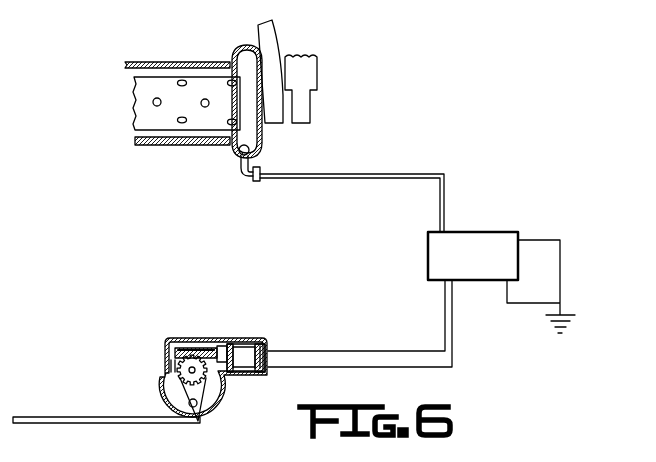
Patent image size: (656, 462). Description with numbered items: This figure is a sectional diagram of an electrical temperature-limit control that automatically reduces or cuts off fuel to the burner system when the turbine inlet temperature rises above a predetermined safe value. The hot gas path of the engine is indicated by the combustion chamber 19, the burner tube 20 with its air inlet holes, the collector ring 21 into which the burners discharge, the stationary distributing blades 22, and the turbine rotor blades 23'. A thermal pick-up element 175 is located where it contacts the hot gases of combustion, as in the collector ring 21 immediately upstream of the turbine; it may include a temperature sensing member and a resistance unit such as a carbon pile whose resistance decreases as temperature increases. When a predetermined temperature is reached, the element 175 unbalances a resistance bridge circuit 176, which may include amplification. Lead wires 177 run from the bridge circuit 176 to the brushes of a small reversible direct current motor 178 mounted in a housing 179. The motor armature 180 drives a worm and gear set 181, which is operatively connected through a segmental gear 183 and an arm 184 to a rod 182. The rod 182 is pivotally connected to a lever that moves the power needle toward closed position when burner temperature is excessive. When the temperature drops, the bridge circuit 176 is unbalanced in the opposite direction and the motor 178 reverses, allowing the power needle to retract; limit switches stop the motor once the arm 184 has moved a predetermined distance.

The combustion chamber 19 is at (153, 62).
The burner tube 20 is at (167, 120).
The collector ring 21 is at (241, 43).
The stationary distributing blades 22 is at (277, 117).
The turbine rotor blades 23' is at (321, 89).
The thermal pick-up element 175 is at (238, 153).
The resistance bridge circuit 176 is at (473, 247).
The lead wires 177 is at (377, 367).
The reversible direct current motor 178 is at (246, 352).
The housing 179 is at (185, 340).
The armature 180 is at (215, 350).
The worm and gear set 181 is at (173, 367).
The rod 182 is at (50, 417).
The segmental gear 183 is at (190, 390).
The arm 184 is at (200, 419).